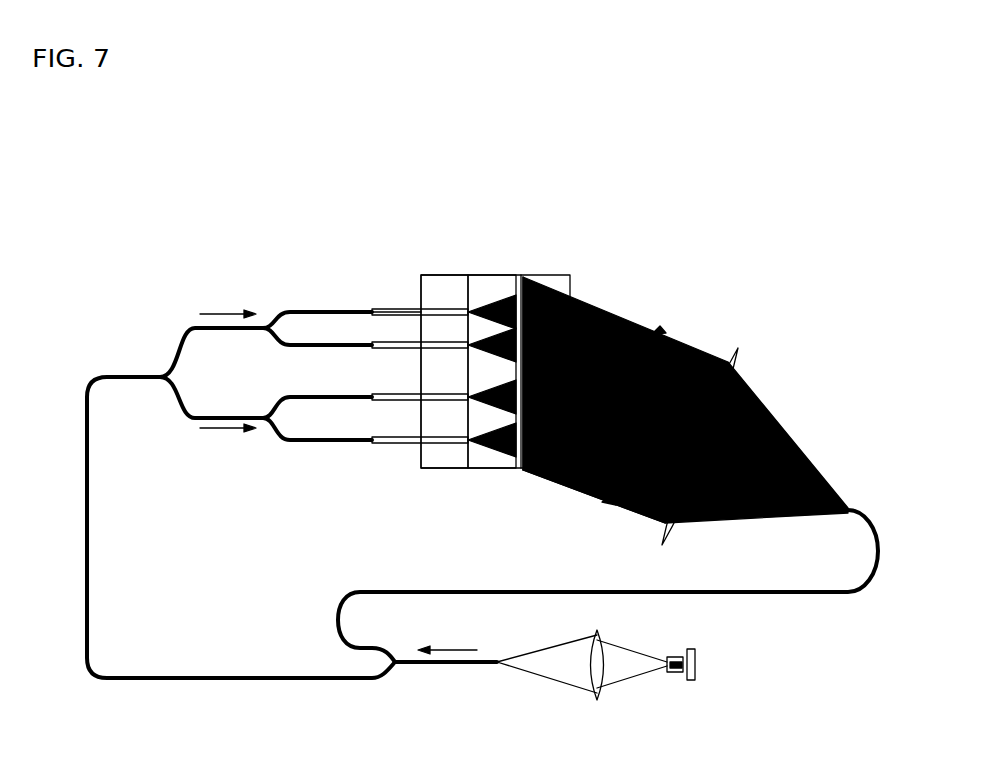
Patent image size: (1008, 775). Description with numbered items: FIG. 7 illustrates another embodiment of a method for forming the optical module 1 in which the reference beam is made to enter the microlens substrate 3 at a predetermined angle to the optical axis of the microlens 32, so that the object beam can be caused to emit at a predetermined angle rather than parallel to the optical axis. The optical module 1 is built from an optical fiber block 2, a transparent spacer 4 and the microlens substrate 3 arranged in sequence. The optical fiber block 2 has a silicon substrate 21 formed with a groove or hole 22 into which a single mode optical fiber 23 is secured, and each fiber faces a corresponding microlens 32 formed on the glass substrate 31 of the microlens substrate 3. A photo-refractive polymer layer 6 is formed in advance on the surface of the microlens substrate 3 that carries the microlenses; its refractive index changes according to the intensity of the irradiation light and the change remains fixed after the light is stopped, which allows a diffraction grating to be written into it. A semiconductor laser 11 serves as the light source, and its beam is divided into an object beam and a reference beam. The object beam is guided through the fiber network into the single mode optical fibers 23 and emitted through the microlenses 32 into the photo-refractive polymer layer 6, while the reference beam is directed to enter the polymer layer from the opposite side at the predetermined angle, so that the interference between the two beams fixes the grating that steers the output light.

The optical module 1 is at (449, 255).
The optical fiber block 2 is at (402, 295).
The microlens substrate 3 is at (580, 263).
The transparent spacer 4 is at (482, 463).
The photo-refractive polymer layer 6 is at (517, 293).
The semiconductor laser 11 is at (680, 673).
The silicon substrate 21 is at (427, 462).
The groove or hole 22 is at (458, 345).
The single mode optical fiber 23 is at (373, 310).
The glass substrate 31 is at (552, 280).
The microlens 32 is at (528, 473).